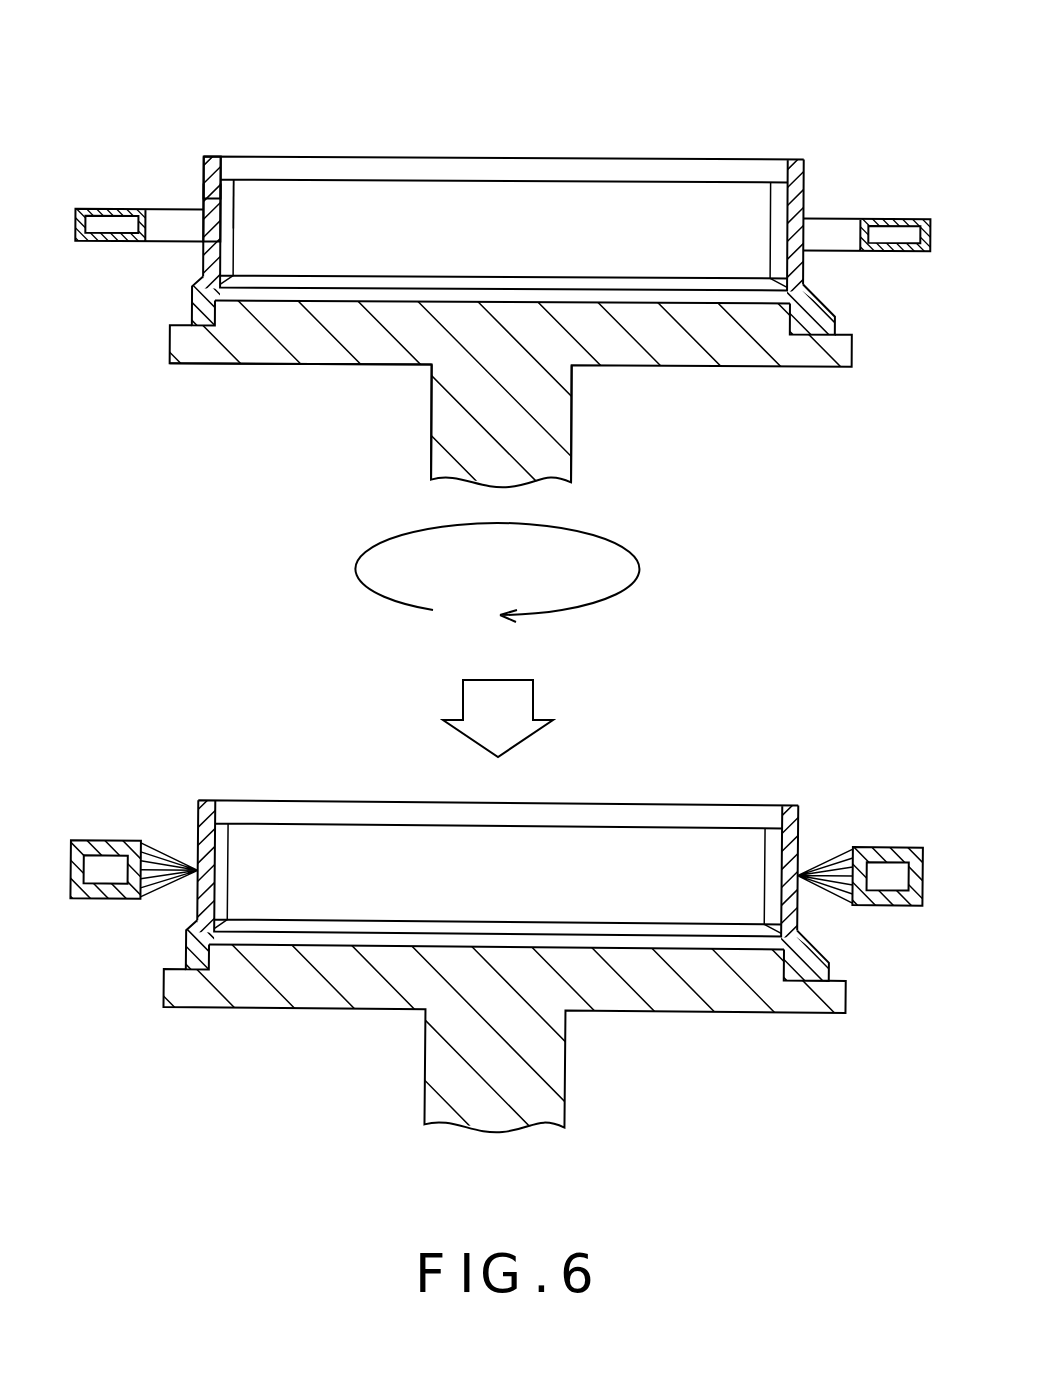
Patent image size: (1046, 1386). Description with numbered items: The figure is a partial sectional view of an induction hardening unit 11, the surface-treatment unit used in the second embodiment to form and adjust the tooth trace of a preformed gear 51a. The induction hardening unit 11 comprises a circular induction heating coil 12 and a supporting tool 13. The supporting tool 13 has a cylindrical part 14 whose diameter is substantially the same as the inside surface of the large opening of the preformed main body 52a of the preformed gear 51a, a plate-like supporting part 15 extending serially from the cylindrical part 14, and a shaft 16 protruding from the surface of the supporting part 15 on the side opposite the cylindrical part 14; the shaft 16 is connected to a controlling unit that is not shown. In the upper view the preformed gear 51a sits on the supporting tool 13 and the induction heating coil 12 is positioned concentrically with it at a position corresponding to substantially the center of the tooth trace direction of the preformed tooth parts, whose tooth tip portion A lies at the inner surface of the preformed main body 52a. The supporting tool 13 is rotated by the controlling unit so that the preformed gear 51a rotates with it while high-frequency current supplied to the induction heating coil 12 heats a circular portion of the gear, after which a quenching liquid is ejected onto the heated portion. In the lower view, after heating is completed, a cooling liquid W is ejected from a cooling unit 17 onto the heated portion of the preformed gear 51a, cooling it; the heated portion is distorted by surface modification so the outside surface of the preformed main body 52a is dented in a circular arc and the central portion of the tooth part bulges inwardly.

The induction hardening unit 11 is at (625, 111).
The induction heating coil 12 is at (833, 218).
The supporting tool 13 is at (853, 352).
The cylindrical part 14 is at (227, 313).
The supporting part 15 is at (267, 364).
The shaft 16 is at (440, 428).
The cooling unit 17 is at (90, 844).
The preformed gear 51a is at (203, 167).
The preformed main body 52a is at (203, 197).
The tooth tip portion A is at (231, 203).
The cooling liquid W is at (166, 856).